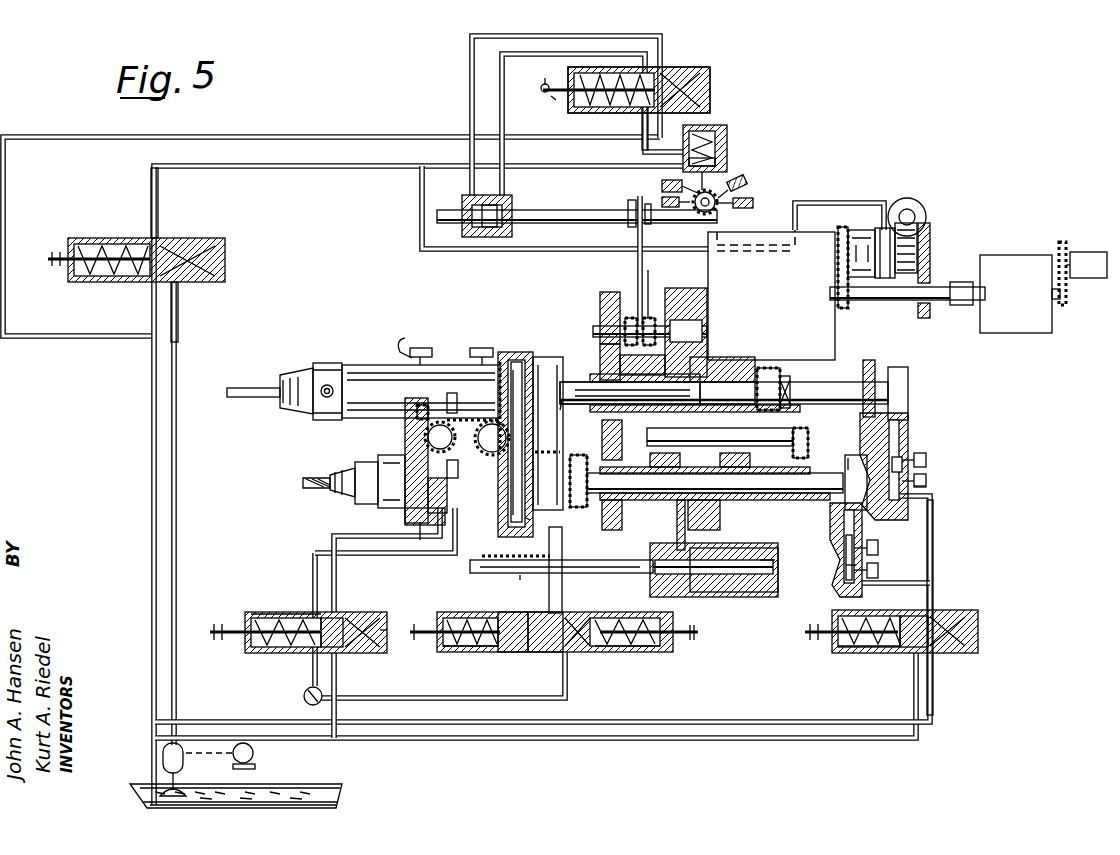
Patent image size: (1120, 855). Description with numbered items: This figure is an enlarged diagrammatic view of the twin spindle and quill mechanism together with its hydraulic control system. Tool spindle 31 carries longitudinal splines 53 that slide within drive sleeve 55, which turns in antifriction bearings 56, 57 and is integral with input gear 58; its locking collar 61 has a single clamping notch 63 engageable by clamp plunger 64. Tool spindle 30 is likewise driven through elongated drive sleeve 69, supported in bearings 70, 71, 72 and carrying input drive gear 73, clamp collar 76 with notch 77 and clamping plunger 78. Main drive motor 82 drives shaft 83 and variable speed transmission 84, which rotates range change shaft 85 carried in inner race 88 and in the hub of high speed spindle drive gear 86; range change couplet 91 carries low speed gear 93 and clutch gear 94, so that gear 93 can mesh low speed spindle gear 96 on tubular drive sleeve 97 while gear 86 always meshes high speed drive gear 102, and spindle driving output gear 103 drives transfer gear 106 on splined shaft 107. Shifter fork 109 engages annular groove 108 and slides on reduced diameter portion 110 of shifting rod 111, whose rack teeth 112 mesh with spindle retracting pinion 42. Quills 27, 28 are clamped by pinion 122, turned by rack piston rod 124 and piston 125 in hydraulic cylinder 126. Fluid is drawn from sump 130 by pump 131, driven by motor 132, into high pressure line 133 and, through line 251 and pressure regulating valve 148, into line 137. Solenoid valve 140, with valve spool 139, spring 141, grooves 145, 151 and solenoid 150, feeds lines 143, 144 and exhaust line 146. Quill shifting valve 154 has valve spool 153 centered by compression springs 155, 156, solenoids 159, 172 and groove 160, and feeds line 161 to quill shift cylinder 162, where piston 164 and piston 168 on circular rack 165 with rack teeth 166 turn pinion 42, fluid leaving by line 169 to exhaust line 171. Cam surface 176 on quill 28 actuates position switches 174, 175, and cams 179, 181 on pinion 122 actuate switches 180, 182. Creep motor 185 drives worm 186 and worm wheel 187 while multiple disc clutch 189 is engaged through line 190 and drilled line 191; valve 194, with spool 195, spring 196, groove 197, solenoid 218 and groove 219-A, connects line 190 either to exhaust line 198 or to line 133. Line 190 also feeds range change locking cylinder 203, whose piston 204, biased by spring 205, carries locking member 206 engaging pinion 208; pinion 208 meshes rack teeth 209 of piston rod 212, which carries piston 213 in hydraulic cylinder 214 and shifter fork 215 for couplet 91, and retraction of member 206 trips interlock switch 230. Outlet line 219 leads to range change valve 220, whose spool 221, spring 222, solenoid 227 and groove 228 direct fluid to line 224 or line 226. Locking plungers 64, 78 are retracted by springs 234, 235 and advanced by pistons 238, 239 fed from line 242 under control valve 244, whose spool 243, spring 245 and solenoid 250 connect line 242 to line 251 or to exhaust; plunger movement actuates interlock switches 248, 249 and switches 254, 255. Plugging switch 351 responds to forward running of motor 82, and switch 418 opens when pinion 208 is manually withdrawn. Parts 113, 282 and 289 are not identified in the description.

The spindle quill 27 is at (468, 512).
The spindle quill 28 is at (360, 372).
The tool spindle 30 is at (590, 501).
The tool spindle 31 is at (568, 402).
The spindle retracting pinion 42 is at (537, 436).
The longitudinal splines 53 is at (752, 375).
The drive sleeve 55 is at (838, 382).
The antifriction bearing 56 is at (786, 374).
The antifriction bearing 57 is at (876, 370).
The power driving input gear 58 is at (766, 368).
The locking collar 61 is at (910, 382).
The clamping notch 63 is at (908, 417).
The clamp plunger 64 is at (899, 436).
The drive sleeve 69 is at (788, 501).
The antifriction bearing 70 is at (622, 505).
The antifriction bearing 71 is at (700, 530).
The antifriction bearing 72 is at (850, 458).
The input drive gear 73 is at (720, 512).
The clamp collar 76 is at (862, 452).
The clamp notch 77 is at (870, 505).
The clamping plunger 78 is at (844, 534).
The main drive motor 82 is at (1020, 333).
The shaft 83 is at (888, 301).
The variable speed transmission mechanism 84 is at (835, 334).
The range change shaft 85 is at (700, 329).
The high speed spindle drive gear 86 is at (676, 296).
The inner race 88 is at (604, 319).
The range change couplet 91 is at (648, 290).
The low speed spindle drive gear 93 is at (630, 316).
The clutch gear 94 is at (652, 316).
The low speed spindle gear 96 is at (605, 361).
The tubular drive sleeve 97 is at (602, 429).
The high speed drive gear 102 is at (665, 362).
The spindle driving output gear 103 is at (730, 366).
The transfer gear 106 is at (795, 450).
The splined shaft 107 is at (650, 446).
The annular groove 108 is at (660, 401).
The shifter fork 109 is at (656, 580).
The reduced diameter portion 110 is at (700, 592).
The shifting rod 111 is at (613, 560).
The rack teeth 112 is at (510, 556).
The piston 113 is at (778, 571).
The pinion 122 is at (405, 445).
The piston rod 124 is at (428, 440).
The piston 125 is at (432, 525).
The hydraulic cylinder 126 is at (405, 512).
The sump 130 is at (135, 780).
The pump 131 is at (183, 760).
The motor 132 is at (250, 760).
The high pressure line 133 is at (177, 578).
The line 137 is at (312, 683).
The valve spool 139 is at (377, 622).
The solenoid valve 140 is at (300, 660).
The spring 141 is at (270, 612).
The line 143 is at (392, 556).
The line 144 is at (337, 578).
The valve spool groove 145 is at (340, 613).
The exhaust line 146 is at (337, 668).
The pressure regulating valve 148 is at (305, 699).
The solenoid 150 is at (230, 637).
The valve spool groove 151 is at (370, 613).
The valve spool 153 is at (535, 652).
The quill shifting valve 154 is at (590, 658).
The compression spring 155 is at (470, 652).
The compression spring 156 is at (640, 652).
The solenoid 159 is at (690, 636).
The valve spool groove 160 is at (545, 612).
The line 161 is at (563, 582).
The quill shift cylinder 162 is at (525, 520).
The piston 164 is at (512, 357).
The circular rack 165 is at (524, 382).
The rack teeth 166 is at (500, 392).
The piston 168 is at (522, 458).
The line 169 is at (548, 580).
The exhaust line 171 is at (466, 722).
The solenoid 172 is at (420, 641).
The position indicating switch 174 is at (484, 347).
The position indicating switch 175 is at (430, 347).
The indented cam surface 176 is at (415, 355).
The cam 179 is at (420, 405).
The switch 180 is at (450, 393).
The cam 181 is at (466, 440).
The switch 182 is at (458, 470).
The creep motor 185 is at (921, 204).
The worm 186 is at (915, 216).
The worm wheel 187 is at (918, 243).
The multiple disc clutch 189 is at (868, 230).
The line 190 is at (284, 168).
The drilled line 191 is at (882, 280).
The valve 194 is at (178, 290).
The valve spool 195 is at (226, 262).
The spring 196 is at (122, 282).
The valve spool groove 197 is at (156, 240).
The exhaust line 198 is at (358, 139).
The range change locking cylinder 203 is at (718, 132).
The piston 204 is at (717, 165).
The spring 205 is at (717, 150).
The locking member 206 is at (680, 180).
The pinion 208 is at (712, 212).
The rack teeth 209 is at (712, 252).
The piston rod 212 is at (550, 224).
The piston 213 is at (470, 200).
The hydraulic cylinder 214 is at (500, 210).
The shifter fork 215 is at (636, 260).
The solenoid 218 is at (52, 268).
The outlet line 219 is at (642, 152).
The valve spool groove 219-A is at (210, 278).
The range change valve 220 is at (675, 62).
The valve spool 221 is at (700, 95).
The spring 222 is at (600, 110).
The line 224 is at (535, 55).
The line 226 is at (470, 60).
The solenoid 227 is at (548, 98).
The groove 228 is at (702, 84).
The interlock switch 230 is at (662, 200).
The spring 234 is at (903, 450).
The spring 235 is at (846, 548).
The piston 238 is at (926, 480).
The piston 239 is at (846, 563).
The hydraulic line 242 is at (933, 548).
The valve spool 243 is at (948, 653).
The control valve 244 is at (900, 653).
The spring 245 is at (838, 653).
The interlock switch 248 is at (926, 460).
The interlock switch 249 is at (878, 547).
The solenoid 250 is at (820, 641).
The main pressure supply line 251 is at (578, 741).
The switch 254 is at (926, 487).
The switch 255 is at (878, 570).
The flange 282 is at (650, 226).
The switch 289 is at (753, 205).
The plugging switch 351 is at (1086, 254).
The switch 418 is at (746, 184).